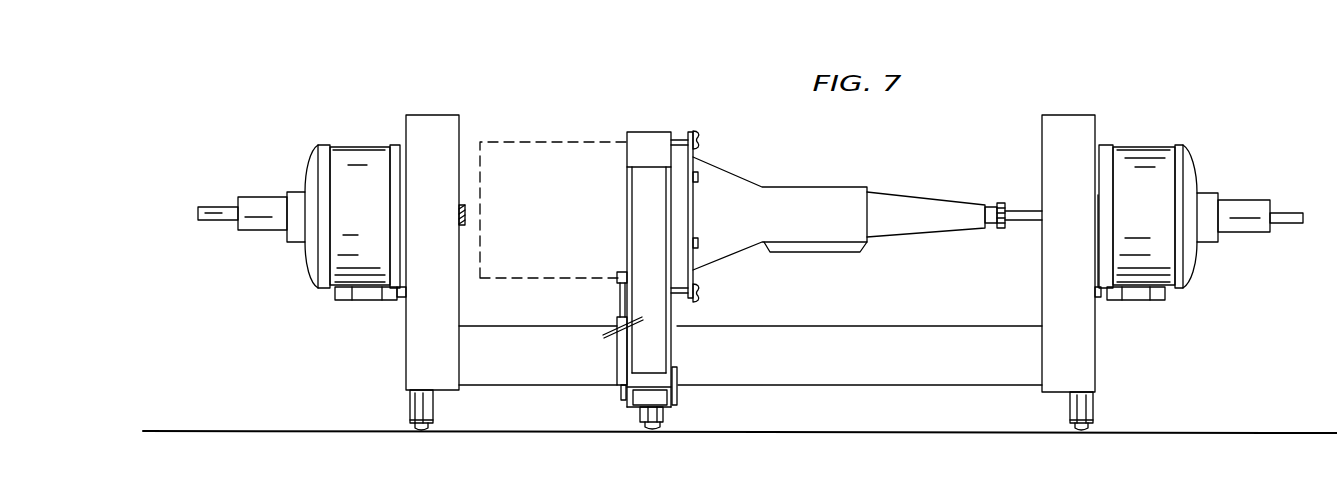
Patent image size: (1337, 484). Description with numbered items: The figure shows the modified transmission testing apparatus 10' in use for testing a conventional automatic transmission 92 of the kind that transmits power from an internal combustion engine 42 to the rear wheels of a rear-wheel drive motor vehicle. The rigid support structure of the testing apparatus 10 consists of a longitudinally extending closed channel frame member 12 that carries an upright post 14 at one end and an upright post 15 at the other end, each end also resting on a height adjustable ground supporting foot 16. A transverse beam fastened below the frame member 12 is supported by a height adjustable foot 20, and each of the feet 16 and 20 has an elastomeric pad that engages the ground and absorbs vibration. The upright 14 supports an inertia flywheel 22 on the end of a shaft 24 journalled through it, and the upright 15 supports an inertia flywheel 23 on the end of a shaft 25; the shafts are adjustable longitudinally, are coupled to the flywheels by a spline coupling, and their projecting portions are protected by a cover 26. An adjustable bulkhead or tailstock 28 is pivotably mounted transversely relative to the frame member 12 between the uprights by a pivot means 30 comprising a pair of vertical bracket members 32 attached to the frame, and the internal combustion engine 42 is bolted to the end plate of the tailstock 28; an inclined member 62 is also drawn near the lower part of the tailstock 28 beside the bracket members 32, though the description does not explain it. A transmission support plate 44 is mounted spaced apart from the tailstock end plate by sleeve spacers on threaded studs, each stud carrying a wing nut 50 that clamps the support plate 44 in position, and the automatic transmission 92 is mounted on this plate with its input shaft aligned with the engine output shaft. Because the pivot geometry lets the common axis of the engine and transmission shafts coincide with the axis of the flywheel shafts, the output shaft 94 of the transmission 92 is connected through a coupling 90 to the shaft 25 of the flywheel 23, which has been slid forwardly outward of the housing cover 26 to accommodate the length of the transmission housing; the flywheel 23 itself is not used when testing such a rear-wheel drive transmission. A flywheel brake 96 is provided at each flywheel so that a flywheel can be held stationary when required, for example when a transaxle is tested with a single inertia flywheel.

The transaxle transmission testing apparatus 10 is at (943, 132).
The modified apparatus 10' is at (1202, 366).
The longitudinal frame member 12 is at (771, 323).
The upright post 14 is at (420, 367).
The upright post 15 is at (1090, 347).
The height adjustable ground supporting foot 16 is at (428, 407).
The height adjustable foot 20 is at (663, 417).
The inertia flywheel 22 is at (342, 162).
The inertia flywheel 23 is at (1160, 267).
The shaft 24 is at (462, 205).
The shaft 25 is at (1293, 215).
The cover 26 is at (263, 225).
The bulkhead or tailstock 28 is at (640, 128).
The pivot means 30 is at (612, 377).
The vertical bracket member 32 is at (677, 377).
The internal combustion engine 42 is at (538, 140).
The transmission support plate 44 is at (690, 132).
The wing nut 50 is at (699, 136).
The adjusting rod 62 is at (612, 335).
The coupling 90 is at (1002, 230).
The conventional automatic transmission 92 is at (833, 183).
The output shaft 94 is at (992, 226).
The flywheel brake 96 is at (366, 305).